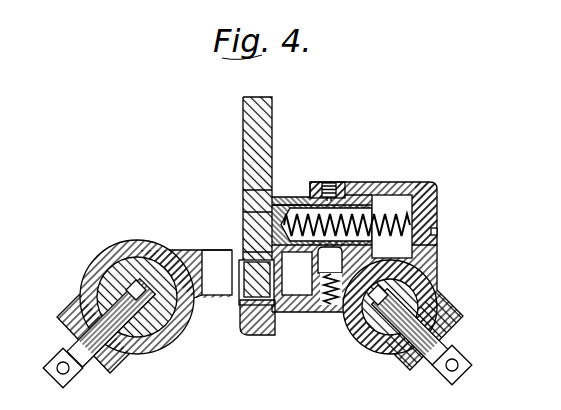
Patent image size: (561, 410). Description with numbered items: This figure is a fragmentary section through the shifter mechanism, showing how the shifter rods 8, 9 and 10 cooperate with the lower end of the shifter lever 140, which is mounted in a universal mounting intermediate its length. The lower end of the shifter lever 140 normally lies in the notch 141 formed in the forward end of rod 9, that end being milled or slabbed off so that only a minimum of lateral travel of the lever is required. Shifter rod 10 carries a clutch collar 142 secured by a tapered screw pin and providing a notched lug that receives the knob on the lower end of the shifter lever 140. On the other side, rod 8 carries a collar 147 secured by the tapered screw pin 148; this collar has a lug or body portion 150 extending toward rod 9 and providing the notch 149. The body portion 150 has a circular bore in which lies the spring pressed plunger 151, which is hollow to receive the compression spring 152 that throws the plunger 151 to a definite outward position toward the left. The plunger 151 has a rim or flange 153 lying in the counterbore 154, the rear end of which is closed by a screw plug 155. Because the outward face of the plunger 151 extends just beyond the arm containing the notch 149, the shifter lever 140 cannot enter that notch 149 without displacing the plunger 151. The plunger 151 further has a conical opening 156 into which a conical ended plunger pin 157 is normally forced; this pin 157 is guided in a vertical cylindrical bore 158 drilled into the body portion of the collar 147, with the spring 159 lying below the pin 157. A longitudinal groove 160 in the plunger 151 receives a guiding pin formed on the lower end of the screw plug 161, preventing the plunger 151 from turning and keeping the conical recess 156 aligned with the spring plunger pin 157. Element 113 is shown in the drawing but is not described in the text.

The shifter lever 140 is at (246, 128).
The groove 160 is at (278, 199).
The spring pressed plunger 151 is at (252, 213).
The conical opening 156 is at (258, 238).
The body portion 150 is at (440, 188).
The counterbore 154 is at (418, 183).
The screw plug 161 is at (339, 184).
The screw plug 155 is at (440, 205).
The rim or flange 153 is at (397, 198).
The compression spring 152 is at (438, 233).
The notch 149 is at (289, 296).
The plunger pin 157 is at (312, 266).
The spring 159 is at (325, 300).
The notch 141 is at (247, 301).
The shifter rod 9 is at (252, 334).
The collar 147 is at (440, 266).
The vertical cylindrical bore 158 is at (351, 336).
The shifter rod 8 is at (380, 330).
The tapered screw pin 148 is at (462, 318).
The clutch collar 142 is at (150, 245).
The arm 113 is at (90, 322).
The shifter rod 10 is at (107, 290).